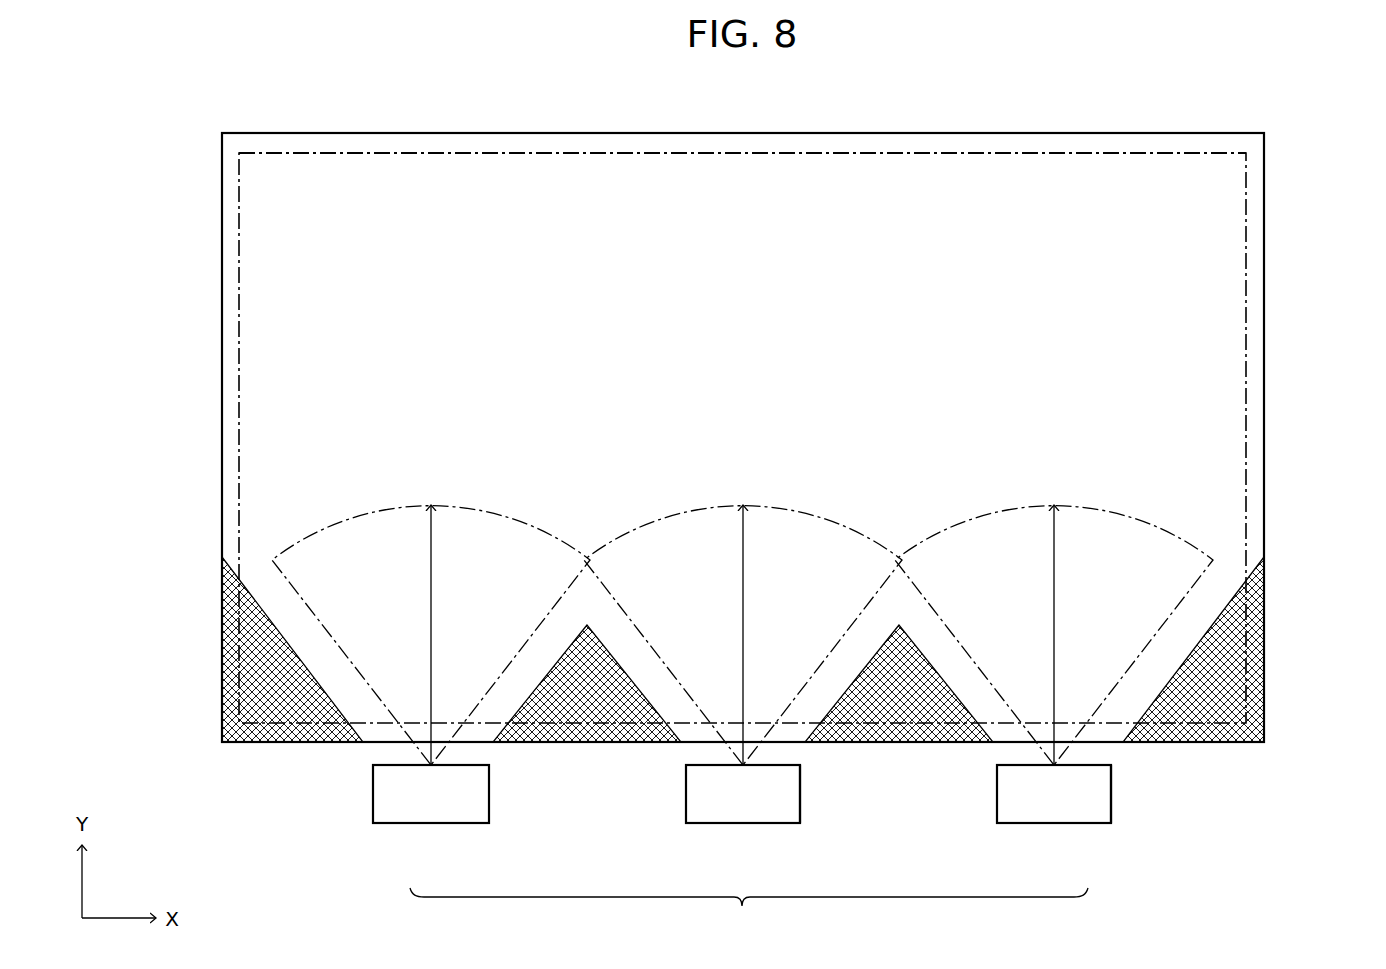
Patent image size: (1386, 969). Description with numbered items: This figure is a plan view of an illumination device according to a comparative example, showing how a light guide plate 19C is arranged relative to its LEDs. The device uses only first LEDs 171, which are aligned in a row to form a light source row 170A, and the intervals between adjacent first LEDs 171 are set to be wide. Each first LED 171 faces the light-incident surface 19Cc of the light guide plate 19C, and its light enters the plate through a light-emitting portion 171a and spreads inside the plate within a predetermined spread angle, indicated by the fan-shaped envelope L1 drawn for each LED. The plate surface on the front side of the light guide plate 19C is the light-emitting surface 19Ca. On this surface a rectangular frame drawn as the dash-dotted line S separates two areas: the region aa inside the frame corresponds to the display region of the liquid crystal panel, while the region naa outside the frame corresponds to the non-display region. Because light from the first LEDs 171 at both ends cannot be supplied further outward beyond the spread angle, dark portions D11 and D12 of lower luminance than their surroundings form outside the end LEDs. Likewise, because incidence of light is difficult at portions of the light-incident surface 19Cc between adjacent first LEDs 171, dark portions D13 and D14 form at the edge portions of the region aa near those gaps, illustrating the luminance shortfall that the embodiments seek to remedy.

The light guide plate 19C is at (1173, 133).
The light-emitting surface 19Ca is at (1213, 287).
The light-incident surface 19Cc is at (950, 745).
The dash-dotted line S is at (494, 153).
The region corresponding to the non-display region naa is at (742, 143).
The region corresponding to the display region aa is at (888, 178).
The dark portion D11 is at (1230, 650).
The dark portion D12 is at (258, 647).
The dark portion D13 is at (897, 703).
The dark portion D14 is at (586, 705).
The light emission range L1 is at (430, 548).
The first LED 171 is at (441, 805).
The light emitting surface of light source 171a is at (788, 762).
The light source row 170A is at (749, 912).